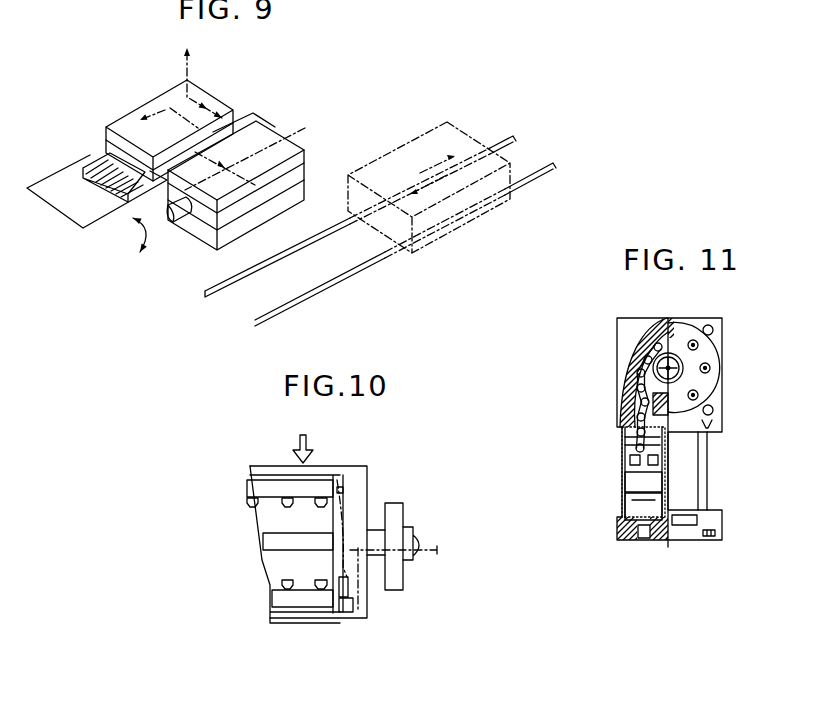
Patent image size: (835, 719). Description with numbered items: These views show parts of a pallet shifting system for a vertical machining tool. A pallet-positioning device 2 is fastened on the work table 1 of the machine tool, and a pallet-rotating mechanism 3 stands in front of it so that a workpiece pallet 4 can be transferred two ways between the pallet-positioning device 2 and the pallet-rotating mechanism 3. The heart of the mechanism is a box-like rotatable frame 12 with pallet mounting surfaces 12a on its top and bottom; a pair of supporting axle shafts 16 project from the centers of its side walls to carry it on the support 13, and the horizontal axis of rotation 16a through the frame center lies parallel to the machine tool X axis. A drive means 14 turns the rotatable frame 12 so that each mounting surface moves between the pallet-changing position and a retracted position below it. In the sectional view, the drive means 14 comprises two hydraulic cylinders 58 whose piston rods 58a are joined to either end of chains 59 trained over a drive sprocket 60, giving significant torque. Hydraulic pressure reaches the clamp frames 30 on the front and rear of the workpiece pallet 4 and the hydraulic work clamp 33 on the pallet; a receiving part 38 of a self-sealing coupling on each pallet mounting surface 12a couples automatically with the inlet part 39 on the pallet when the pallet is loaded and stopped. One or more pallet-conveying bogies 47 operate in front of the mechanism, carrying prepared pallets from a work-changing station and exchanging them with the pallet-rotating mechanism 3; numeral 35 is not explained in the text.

In FIG. 9, the work table 1 is at (92, 162).
In FIG. 9, the pallet-positioning device 2 is at (102, 140).
In FIG. 9, the pallet-rotating mechanism 3 is at (263, 110).
In FIG. 10, the pallet-rotating mechanism 3 is at (375, 465).
In FIG. 9, the workpiece pallet 4 is at (152, 102).
In FIG. 10, the workpiece pallet 4 is at (333, 470).
In FIG. 9, the rotatable frame 12 is at (253, 208).
In FIG. 10, the rotatable frame 12 is at (357, 475).
In FIG. 9, the pallet mounting surface 12a is at (290, 138).
In FIG. 10, the support 13 is at (393, 505).
In FIG. 11, the support 13 is at (717, 387).
In FIG. 11, the drive means 14 is at (732, 330).
In FIG. 9, the supporting axle shaft 16 is at (185, 232).
In FIG. 10, the supporting axle shaft 16 is at (410, 533).
In FIG. 11, the supporting axle shaft 16 is at (673, 362).
In FIG. 9, the horizontal axis of rotation 16a is at (140, 237).
In FIG. 9, the clamp frame 30 is at (522, 0).
In FIG. 10, the hydraulic work clamp 33 is at (283, 512).
In FIG. 9, the member 35 is at (592, 0).
In FIG. 10, the receiving part of self-sealing coupling 38 is at (347, 613).
In FIG. 10, the inlet part of self-sealing coupling 39 is at (352, 587).
In FIG. 9, the pallet-conveying bogie 47 is at (448, 220).
In FIG. 11, the hydraulic cylinder 58 is at (620, 475).
In FIG. 11, the piston rod 58a is at (628, 457).
In FIG. 11, the chain 59 is at (640, 373).
In FIG. 11, the drive sprocket 60 is at (657, 397).